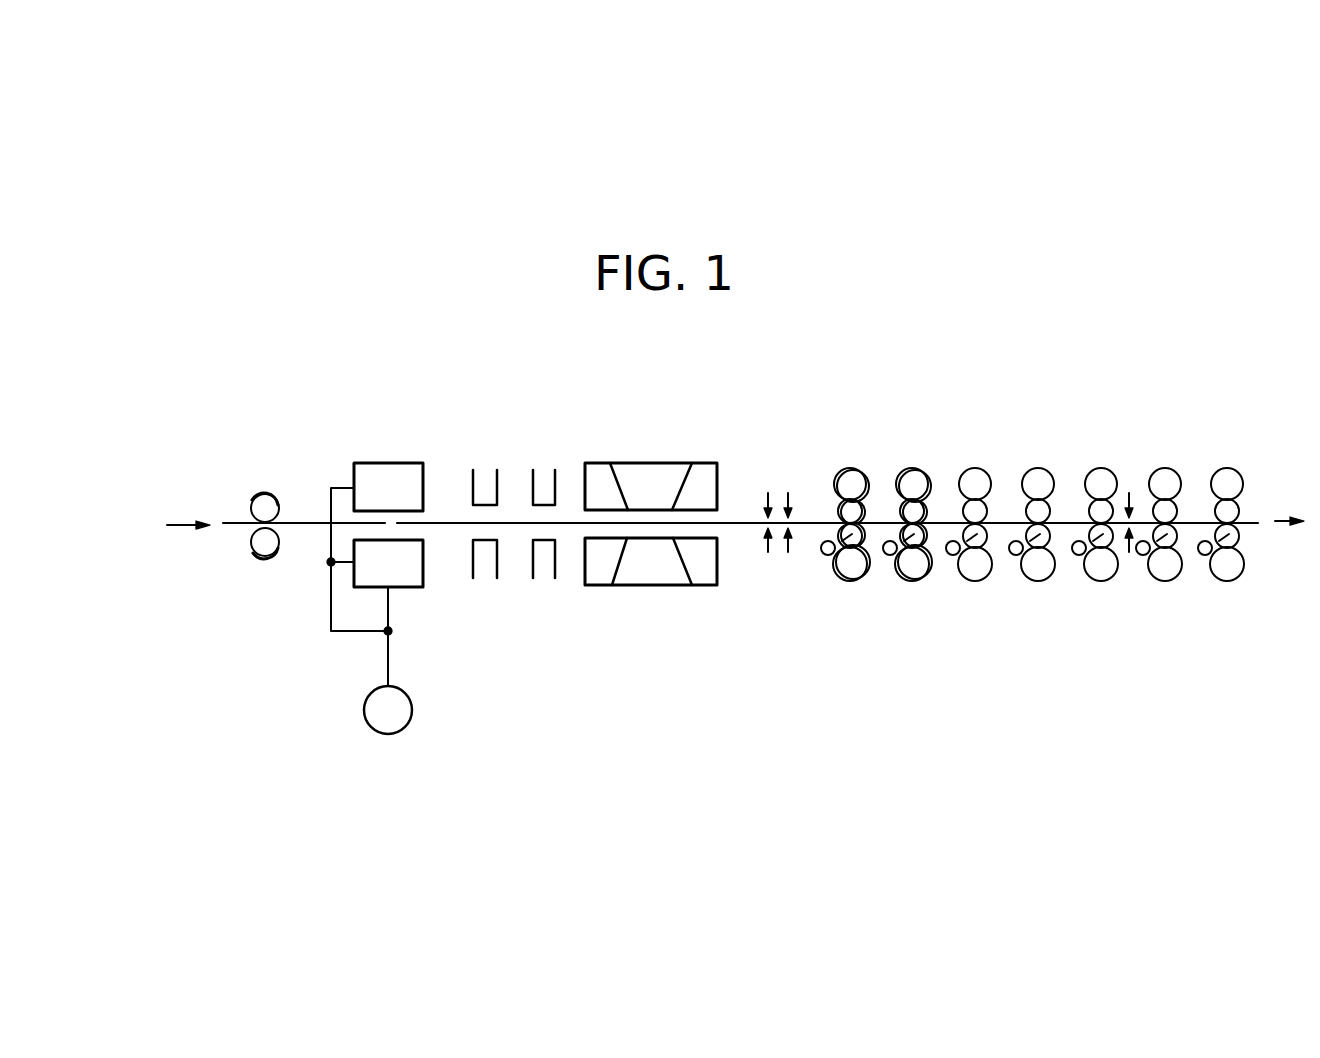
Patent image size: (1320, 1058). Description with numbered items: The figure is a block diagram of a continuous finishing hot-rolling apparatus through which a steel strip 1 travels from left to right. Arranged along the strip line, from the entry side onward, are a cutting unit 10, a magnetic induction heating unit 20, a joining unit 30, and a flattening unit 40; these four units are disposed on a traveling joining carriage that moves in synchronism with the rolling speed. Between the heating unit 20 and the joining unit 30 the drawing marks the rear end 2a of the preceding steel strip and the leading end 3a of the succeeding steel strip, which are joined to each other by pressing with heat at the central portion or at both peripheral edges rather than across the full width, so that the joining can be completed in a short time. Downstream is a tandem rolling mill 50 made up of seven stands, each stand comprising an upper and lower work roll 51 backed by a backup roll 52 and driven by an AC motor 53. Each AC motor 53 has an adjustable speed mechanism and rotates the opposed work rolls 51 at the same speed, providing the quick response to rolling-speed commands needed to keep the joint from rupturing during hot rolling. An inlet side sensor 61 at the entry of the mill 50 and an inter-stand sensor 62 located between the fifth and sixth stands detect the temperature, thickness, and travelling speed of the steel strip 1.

The steel strip 1 is at (736, 524).
The cutting unit 10 is at (265, 493).
The magnetic induction heating unit 20 is at (388, 463).
The rear end of the preceding steel strip 2a is at (397, 523).
The leading end of the succeeding steel strip 3a is at (385, 525).
The joining unit 30 is at (513, 464).
The flattening unit 40 is at (654, 463).
The tandem rolling mill 50 is at (1033, 442).
The work roll 51 is at (858, 510).
The backup roll 52 is at (848, 478).
The AC motor 53 is at (826, 556).
The inlet side sensor 61 is at (777, 491).
The inter-stand sensor 62 is at (1131, 491).